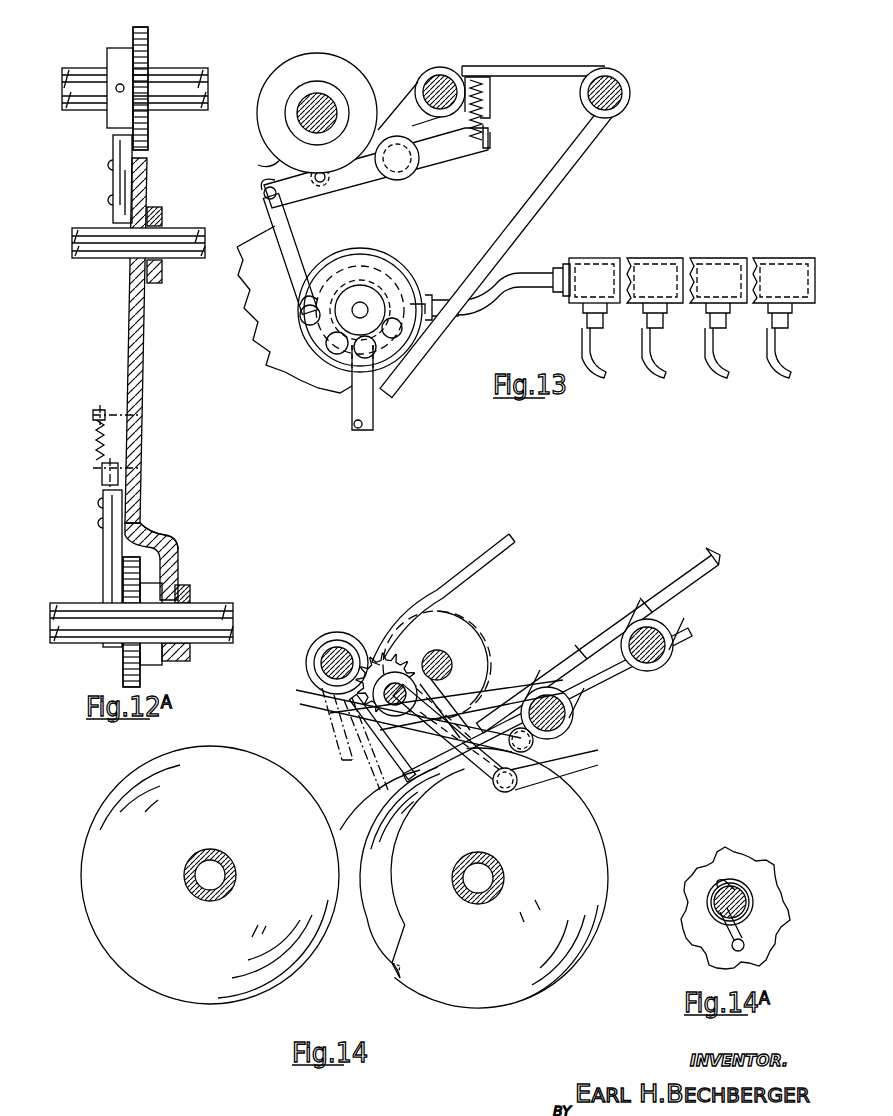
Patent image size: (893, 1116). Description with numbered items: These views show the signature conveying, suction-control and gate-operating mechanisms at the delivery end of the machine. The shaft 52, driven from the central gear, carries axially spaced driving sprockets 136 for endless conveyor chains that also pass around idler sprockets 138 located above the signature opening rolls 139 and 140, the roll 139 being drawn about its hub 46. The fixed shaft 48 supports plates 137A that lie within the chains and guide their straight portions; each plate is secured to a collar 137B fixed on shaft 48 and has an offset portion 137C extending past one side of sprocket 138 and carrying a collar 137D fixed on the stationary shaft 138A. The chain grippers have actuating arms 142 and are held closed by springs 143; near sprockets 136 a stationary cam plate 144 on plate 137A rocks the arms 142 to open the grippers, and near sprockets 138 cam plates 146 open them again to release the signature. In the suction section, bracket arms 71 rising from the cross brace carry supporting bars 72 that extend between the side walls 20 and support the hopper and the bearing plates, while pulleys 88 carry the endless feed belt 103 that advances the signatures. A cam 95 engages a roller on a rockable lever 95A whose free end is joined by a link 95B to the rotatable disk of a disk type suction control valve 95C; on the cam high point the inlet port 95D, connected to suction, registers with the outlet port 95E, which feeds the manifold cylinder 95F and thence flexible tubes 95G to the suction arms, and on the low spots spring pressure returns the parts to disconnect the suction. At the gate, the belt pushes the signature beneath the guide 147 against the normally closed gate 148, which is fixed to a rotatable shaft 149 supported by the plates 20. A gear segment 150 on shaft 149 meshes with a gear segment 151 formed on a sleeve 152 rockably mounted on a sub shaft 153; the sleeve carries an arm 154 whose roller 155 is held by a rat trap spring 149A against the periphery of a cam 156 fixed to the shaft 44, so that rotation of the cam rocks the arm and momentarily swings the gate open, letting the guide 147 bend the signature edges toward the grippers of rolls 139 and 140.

In FIG. 12A, the driving sprockets 136 is at (133, 50).
In FIG. 12A, the shaft 52 is at (176, 76).
In FIG. 12A, the stationary cam plate 144 is at (118, 160).
In FIG. 12A, the collar 137B is at (156, 214).
In FIG. 12A, the fixed shaft 48 is at (84, 232).
In FIG. 12A, the plates 137A is at (136, 318).
In FIG. 12A, the springs 143 is at (94, 442).
In FIG. 12A, the actuating arms 142 is at (94, 478).
In FIG. 12A, the offset portion 137C is at (165, 540).
In FIG. 12A, the cam plates 146 is at (108, 540).
In FIG. 12A, the idler sprockets 138 is at (124, 566).
In FIG. 12A, the stationary shaft 138A is at (76, 610).
In FIG. 14, the stationary shaft 138A is at (445, 655).
In FIG. 12A, the collar 137D is at (184, 592).
In FIG. 13, the cam 95 is at (350, 76).
In FIG. 13, the supporting bars 72 is at (440, 75).
In FIG. 13, the bracket arms 71 is at (540, 178).
In FIG. 13, the rockable lever 95A is at (362, 180).
In FIG. 13, the link 95B is at (292, 240).
In FIG. 13, the disk type suction control valve 95C is at (398, 275).
In FIG. 13, the inlet port 95D is at (405, 360).
In FIG. 13, the outlet port 95E is at (335, 360).
In FIG. 13, the manifold cylinder 95F is at (648, 270).
In FIG. 13, the flexible tubes 95G is at (655, 352).
In FIG. 14, the endless feed belt 103 is at (500, 548).
In FIG. 14, the gear segment 150 is at (365, 636).
In FIG. 14, the gear segment 151 is at (378, 645).
In FIG. 14, the rotatable shaft 149 is at (320, 655).
In FIG. 14A, the rotatable shaft 149 is at (720, 913).
In FIG. 14, the pulleys 88 is at (472, 650).
In FIG. 14, the sleeve 152 is at (396, 678).
In FIG. 14, the sub shaft 153 is at (322, 732).
In FIG. 14, the gate 148 is at (355, 768).
In FIG. 14, the guide 147 is at (350, 800).
In FIG. 14, the signature opening roll 139 is at (250, 765).
In FIG. 14, the hub shaft 46 is at (210, 852).
In FIG. 14, the shaft 44 is at (494, 862).
In FIG. 14, the signature opening roll 140 is at (378, 922).
In FIG. 14, the arm 154 is at (490, 790).
In FIG. 14, the roller 155 is at (555, 770).
In FIG. 14, the cam 156 is at (582, 822).
In FIG. 14A, the side walls 20 is at (755, 878).
In FIG. 14A, the rat trap spring 149A is at (710, 890).